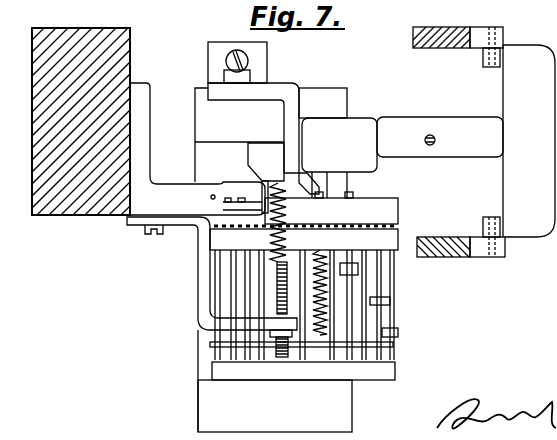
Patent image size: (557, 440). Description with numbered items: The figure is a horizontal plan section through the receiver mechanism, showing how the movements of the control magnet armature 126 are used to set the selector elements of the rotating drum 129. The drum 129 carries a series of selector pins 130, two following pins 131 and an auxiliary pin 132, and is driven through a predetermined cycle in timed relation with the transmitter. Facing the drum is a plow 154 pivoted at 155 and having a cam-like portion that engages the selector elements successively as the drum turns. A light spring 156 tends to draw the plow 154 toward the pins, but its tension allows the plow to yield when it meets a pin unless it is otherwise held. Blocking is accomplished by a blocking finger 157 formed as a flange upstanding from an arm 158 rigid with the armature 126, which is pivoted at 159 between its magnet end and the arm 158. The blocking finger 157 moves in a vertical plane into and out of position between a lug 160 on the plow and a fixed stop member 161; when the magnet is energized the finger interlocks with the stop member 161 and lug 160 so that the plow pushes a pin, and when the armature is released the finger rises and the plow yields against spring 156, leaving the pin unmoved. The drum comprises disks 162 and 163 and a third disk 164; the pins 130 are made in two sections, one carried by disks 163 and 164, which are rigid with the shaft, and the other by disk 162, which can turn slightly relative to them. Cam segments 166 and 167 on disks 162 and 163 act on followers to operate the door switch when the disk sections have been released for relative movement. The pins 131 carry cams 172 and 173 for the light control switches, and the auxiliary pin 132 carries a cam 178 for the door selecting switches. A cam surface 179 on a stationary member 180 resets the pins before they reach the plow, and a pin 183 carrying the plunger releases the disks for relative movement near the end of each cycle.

The armature 126 is at (515, 116).
The drum 129 is at (402, 280).
The pins 130 is at (243, 302).
The pins 131 is at (380, 313).
The auxiliary pin 132 is at (352, 353).
The plow 154 is at (307, 182).
The pivot 155 is at (211, 197).
The spring 156 is at (286, 214).
The blocking finger 157 is at (302, 172).
The arm 158 is at (397, 133).
The pivot 159 is at (483, 51).
The lug 160 is at (283, 178).
The stop member 161 is at (285, 135).
The disk 162 is at (386, 201).
The disk 163 is at (318, 240).
The disk 164 is at (388, 344).
The cam segment 166 is at (393, 203).
The cam segment 167 is at (398, 237).
The cam 172 is at (390, 300).
The cam 173 is at (398, 333).
The cam 178 is at (358, 268).
The cam surface 179 is at (277, 358).
The stationary member 180 is at (231, 370).
The pin 183 is at (333, 192).